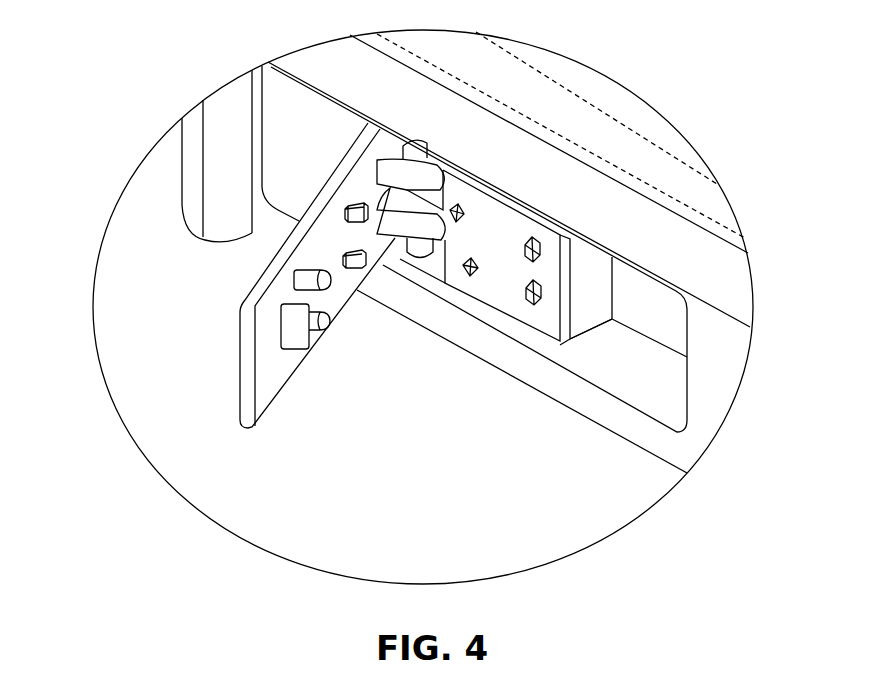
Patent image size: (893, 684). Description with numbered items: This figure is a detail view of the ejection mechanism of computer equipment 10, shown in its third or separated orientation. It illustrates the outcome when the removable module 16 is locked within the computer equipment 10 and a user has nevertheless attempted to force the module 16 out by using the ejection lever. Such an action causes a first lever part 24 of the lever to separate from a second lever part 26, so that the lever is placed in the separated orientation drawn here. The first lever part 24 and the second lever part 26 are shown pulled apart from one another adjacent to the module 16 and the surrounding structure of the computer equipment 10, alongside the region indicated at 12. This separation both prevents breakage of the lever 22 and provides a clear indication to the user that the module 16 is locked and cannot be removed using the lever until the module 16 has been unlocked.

The computer equipment 10 is at (607, 512).
The panel 12 is at (597, 90).
The removable module 16 is at (703, 263).
The lever 22 is at (153, 382).
The first lever part 24 is at (267, 393).
The second lever part 26 is at (493, 283).